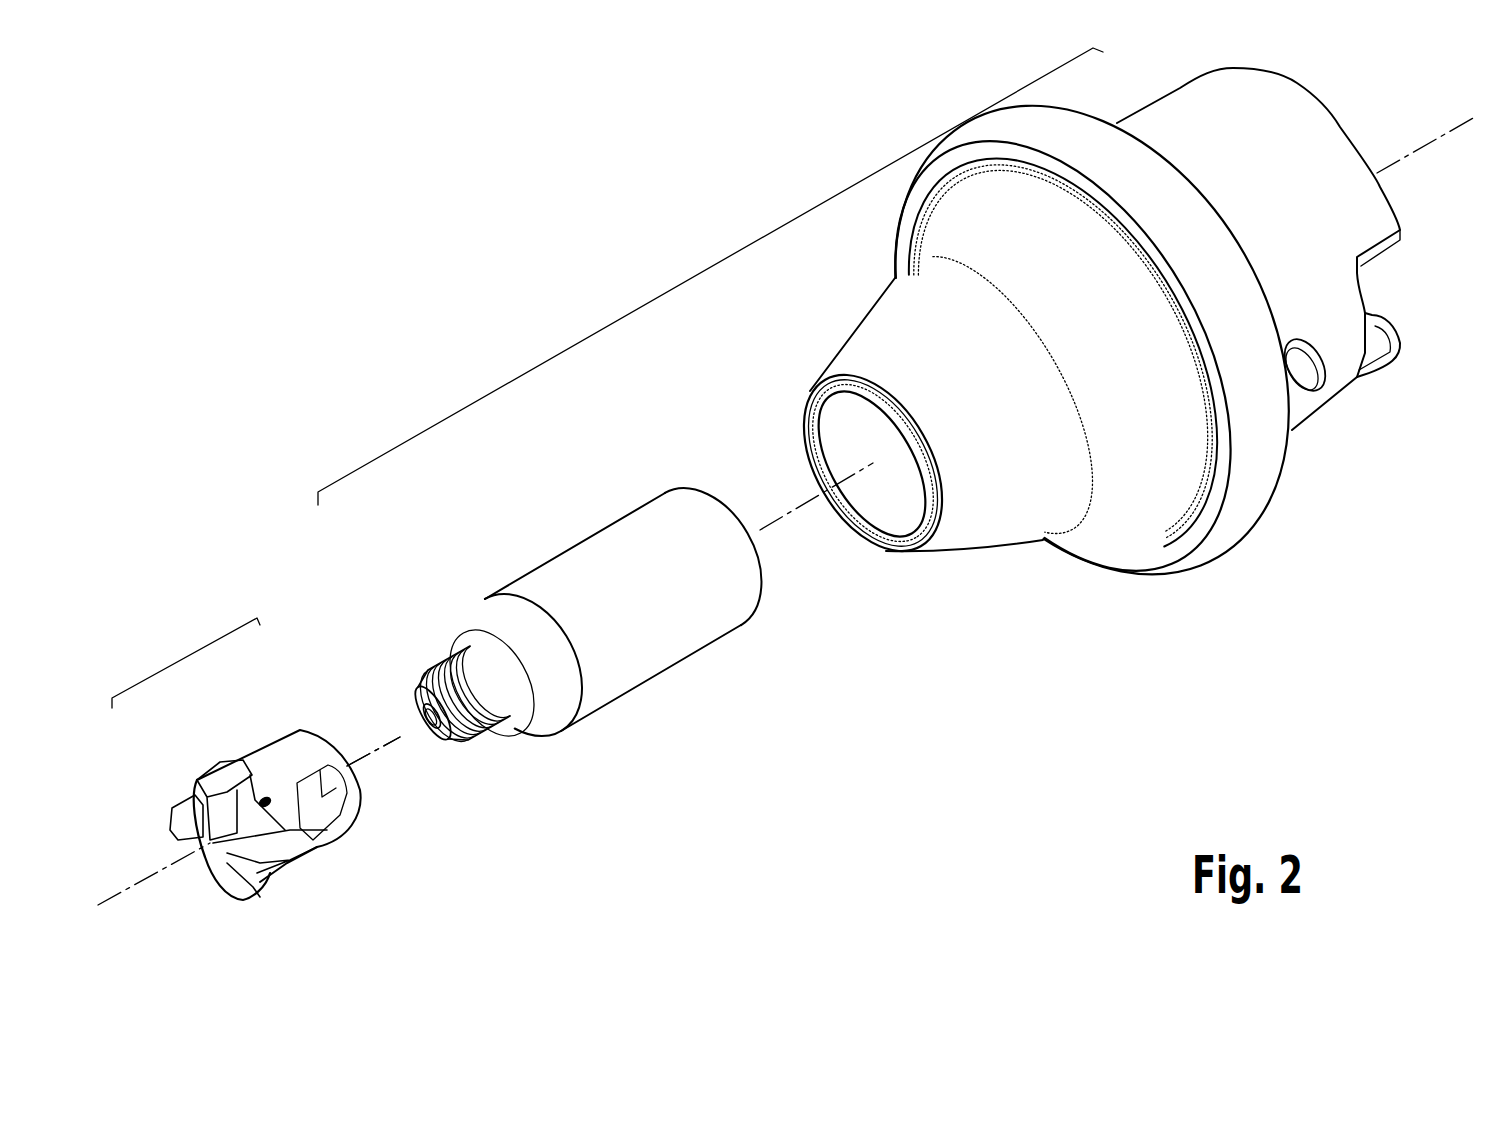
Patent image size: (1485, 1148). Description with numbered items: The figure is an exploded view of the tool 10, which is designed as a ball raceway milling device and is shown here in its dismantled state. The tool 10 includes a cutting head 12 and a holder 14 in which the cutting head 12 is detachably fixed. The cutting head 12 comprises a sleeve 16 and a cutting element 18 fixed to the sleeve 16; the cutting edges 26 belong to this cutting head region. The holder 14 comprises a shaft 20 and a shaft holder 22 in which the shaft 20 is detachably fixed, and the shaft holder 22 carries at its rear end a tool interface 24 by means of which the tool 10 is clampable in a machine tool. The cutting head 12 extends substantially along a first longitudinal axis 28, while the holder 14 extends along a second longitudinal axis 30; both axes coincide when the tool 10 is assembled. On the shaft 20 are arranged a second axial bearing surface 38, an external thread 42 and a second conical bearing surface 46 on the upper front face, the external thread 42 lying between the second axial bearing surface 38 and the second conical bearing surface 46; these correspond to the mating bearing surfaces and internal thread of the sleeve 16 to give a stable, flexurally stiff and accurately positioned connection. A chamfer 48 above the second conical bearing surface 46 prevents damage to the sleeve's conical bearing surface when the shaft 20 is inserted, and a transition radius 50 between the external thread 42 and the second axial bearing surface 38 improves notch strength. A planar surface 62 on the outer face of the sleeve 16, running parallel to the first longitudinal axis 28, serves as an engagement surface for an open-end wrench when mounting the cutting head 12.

The tool 10 is at (320, 273).
The cutting head 12 is at (185, 660).
The holder 14 is at (718, 266).
The sleeve 16 is at (313, 843).
The cutting element 18 is at (240, 893).
The shaft 20 is at (658, 652).
The shaft holder 22 is at (998, 523).
The tool interface 24 is at (1328, 385).
The cutting edges 26 is at (197, 793).
The first longitudinal axis 28 is at (140, 880).
The second longitudinal axis 30 is at (400, 737).
The second axial bearing surface 38 is at (467, 633).
The external thread 42 is at (460, 657).
The second conical bearing surface 46 is at (447, 688).
The chamfer 48 is at (447, 740).
The transition radius 50 is at (532, 725).
The planar surface 62 is at (320, 800).